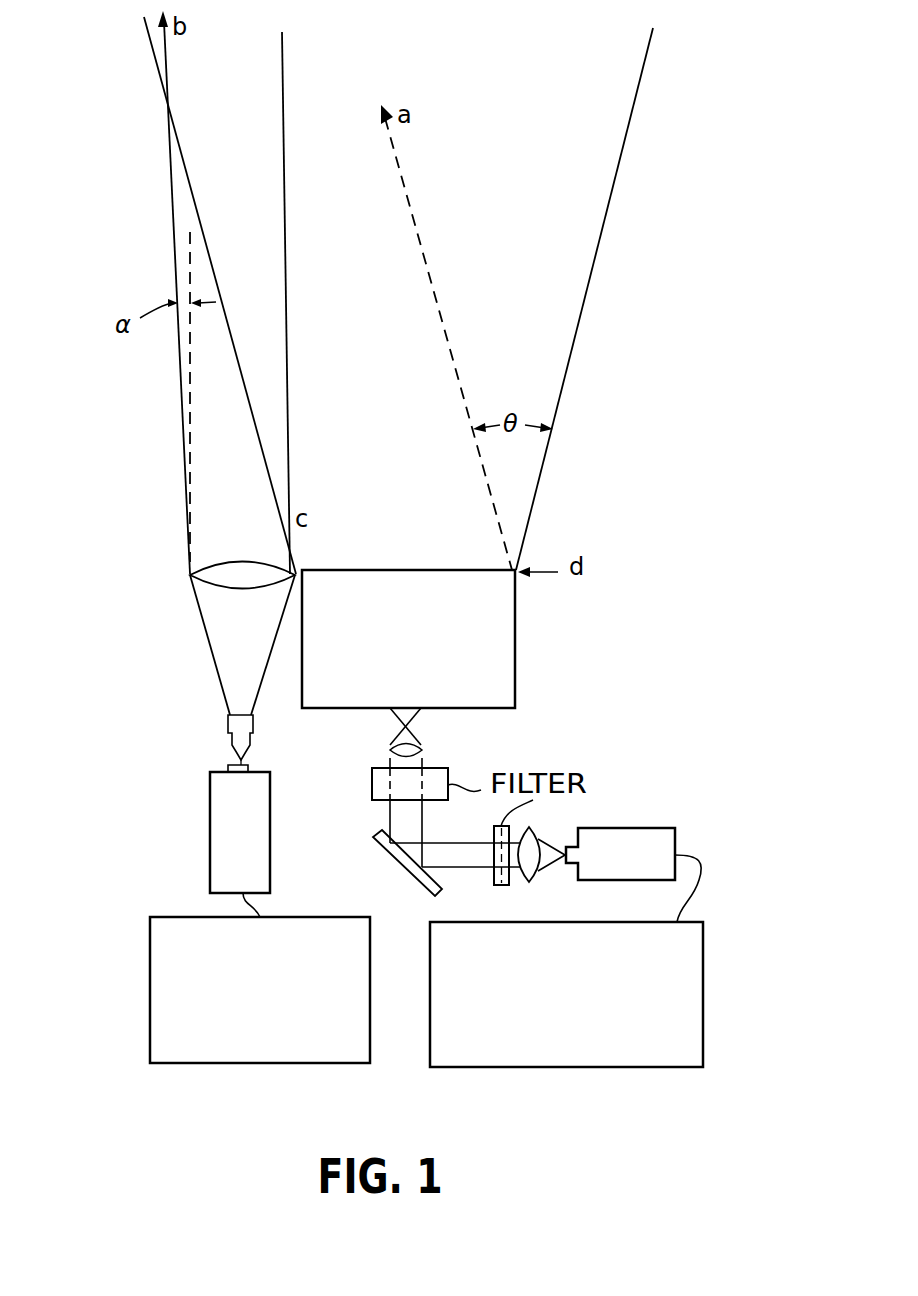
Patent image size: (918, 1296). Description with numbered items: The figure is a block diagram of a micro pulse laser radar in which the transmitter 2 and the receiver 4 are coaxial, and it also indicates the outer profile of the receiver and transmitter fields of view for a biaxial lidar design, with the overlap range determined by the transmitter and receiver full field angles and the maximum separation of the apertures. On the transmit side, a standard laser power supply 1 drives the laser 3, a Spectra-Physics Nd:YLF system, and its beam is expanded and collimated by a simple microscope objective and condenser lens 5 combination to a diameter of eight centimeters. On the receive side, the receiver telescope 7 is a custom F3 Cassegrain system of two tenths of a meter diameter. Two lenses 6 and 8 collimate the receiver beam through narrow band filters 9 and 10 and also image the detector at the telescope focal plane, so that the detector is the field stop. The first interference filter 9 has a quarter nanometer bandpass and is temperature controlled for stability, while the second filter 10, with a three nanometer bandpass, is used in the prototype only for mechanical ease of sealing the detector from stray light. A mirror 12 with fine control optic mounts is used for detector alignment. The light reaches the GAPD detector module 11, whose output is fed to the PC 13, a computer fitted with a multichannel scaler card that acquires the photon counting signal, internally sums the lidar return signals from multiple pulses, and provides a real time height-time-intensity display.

The laser power supply 1 is at (150, 997).
The transmitter 2 is at (148, 741).
The laser 3 is at (210, 843).
The receiver 4 is at (640, 711).
The condenser lens 5 is at (190, 575).
The lens 6 is at (421, 751).
The receiver telescope 7 is at (515, 632).
The lens 8 is at (531, 882).
The first interference filter 9 is at (372, 790).
The second filter 10 is at (497, 885).
The GAPD detector module 11 is at (640, 828).
The mirror 12 is at (380, 849).
The PC 13 is at (703, 1017).